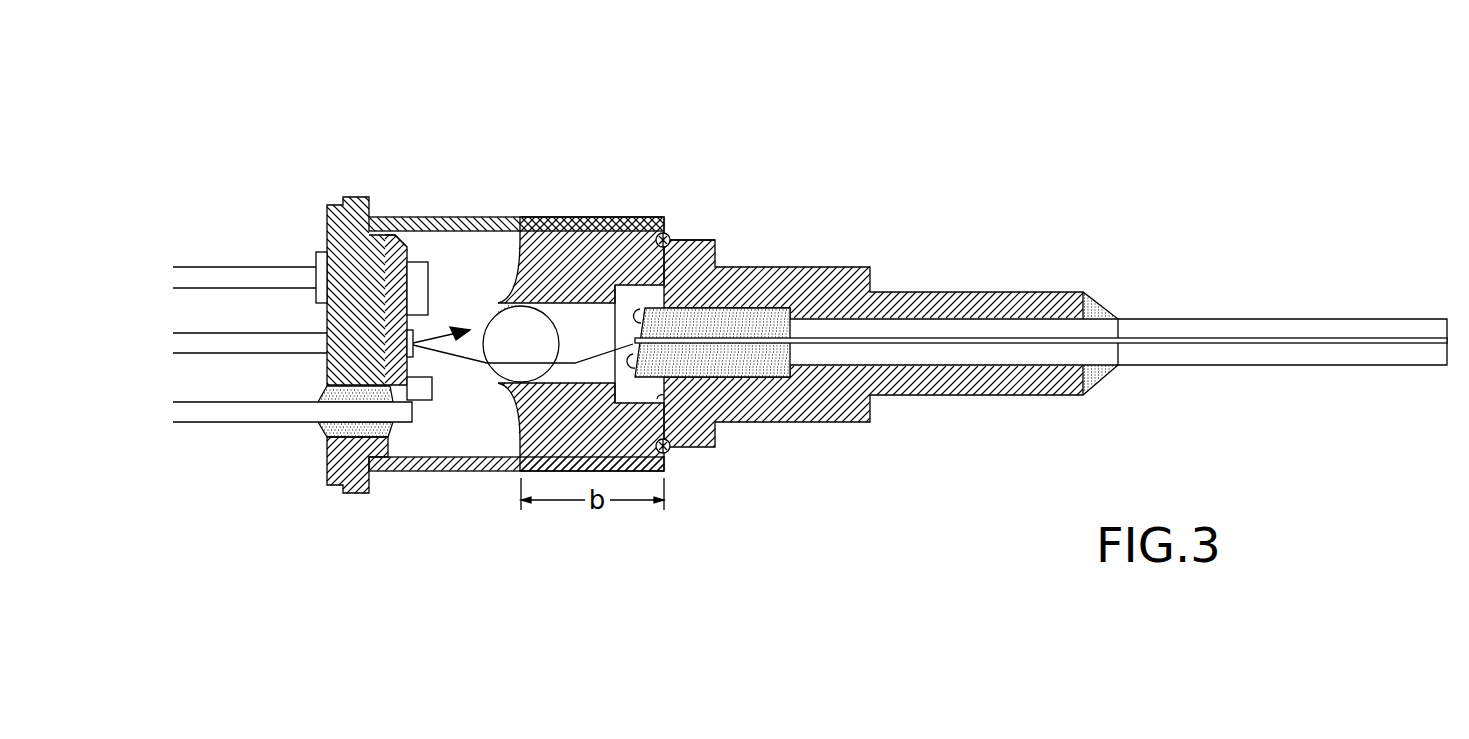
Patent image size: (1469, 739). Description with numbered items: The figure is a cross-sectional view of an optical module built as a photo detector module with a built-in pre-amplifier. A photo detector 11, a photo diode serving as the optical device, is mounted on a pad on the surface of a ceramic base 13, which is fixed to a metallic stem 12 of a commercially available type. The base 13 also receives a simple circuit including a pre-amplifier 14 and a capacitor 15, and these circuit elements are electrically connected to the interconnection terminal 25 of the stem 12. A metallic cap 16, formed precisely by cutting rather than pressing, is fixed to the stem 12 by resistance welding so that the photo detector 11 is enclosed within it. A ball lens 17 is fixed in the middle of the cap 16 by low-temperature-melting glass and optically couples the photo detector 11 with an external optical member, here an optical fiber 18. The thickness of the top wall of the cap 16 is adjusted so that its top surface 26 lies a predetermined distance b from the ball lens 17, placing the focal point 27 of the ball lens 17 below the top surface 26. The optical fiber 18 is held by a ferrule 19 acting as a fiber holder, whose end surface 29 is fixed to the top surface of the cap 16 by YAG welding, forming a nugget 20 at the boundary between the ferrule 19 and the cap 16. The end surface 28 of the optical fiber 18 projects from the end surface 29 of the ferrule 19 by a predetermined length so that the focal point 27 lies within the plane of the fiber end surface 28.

The photo detector 11 is at (415, 316).
The stem 12 is at (328, 496).
The base 13 is at (395, 231).
The pre-amplifier 14 is at (422, 249).
The capacitor 15 is at (428, 414).
The cap 16 is at (561, 477).
The ball lens 17 is at (559, 314).
The optical fiber 18 is at (992, 327).
The ferrule 19 is at (831, 255).
The nugget 20 is at (680, 457).
The interconnection terminal 25 is at (391, 411).
The top surface 26 is at (667, 236).
The focal point 27 is at (645, 378).
The end surface 28 is at (690, 240).
The end surface 29 is at (657, 398).